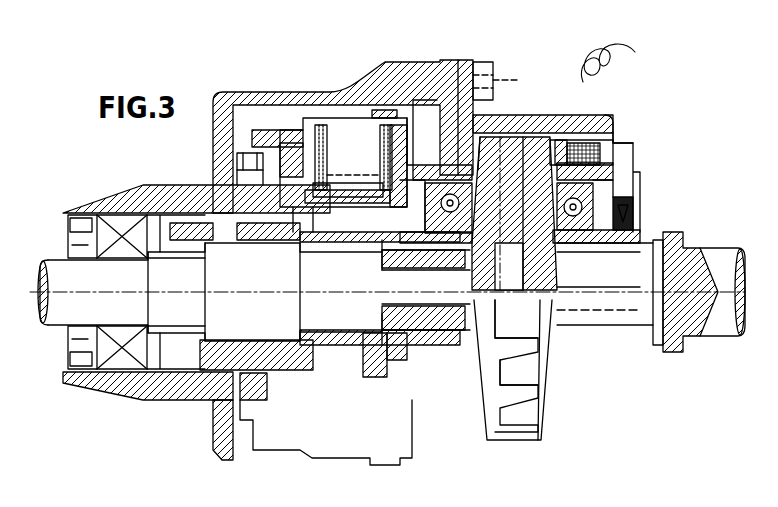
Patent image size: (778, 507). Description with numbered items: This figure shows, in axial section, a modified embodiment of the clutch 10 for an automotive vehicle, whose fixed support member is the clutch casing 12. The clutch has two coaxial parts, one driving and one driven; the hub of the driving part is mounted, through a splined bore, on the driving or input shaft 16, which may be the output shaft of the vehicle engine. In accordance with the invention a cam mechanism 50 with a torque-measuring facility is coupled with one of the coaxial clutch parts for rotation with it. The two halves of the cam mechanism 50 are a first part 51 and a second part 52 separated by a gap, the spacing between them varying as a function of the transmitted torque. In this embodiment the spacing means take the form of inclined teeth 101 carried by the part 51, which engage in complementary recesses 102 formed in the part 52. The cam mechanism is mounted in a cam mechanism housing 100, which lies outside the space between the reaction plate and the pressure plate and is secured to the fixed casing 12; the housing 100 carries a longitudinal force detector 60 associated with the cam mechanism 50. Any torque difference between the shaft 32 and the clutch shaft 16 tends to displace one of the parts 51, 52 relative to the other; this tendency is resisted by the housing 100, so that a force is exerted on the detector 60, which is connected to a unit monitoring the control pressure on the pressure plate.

The clutch 10 is at (255, 127).
The clutch casing 12 is at (333, 73).
The input shaft 16 is at (68, 307).
The shaft 32 is at (687, 252).
The cam mechanism 50 is at (478, 408).
The first part of the cam mechanism 51 is at (485, 150).
The second part of the cam mechanism 52 is at (535, 150).
The longitudinal force detector 60 is at (583, 148).
The cam mechanism housing 100 is at (615, 103).
The inclined teeth 101 is at (495, 318).
The complementary recesses 102 is at (517, 345).